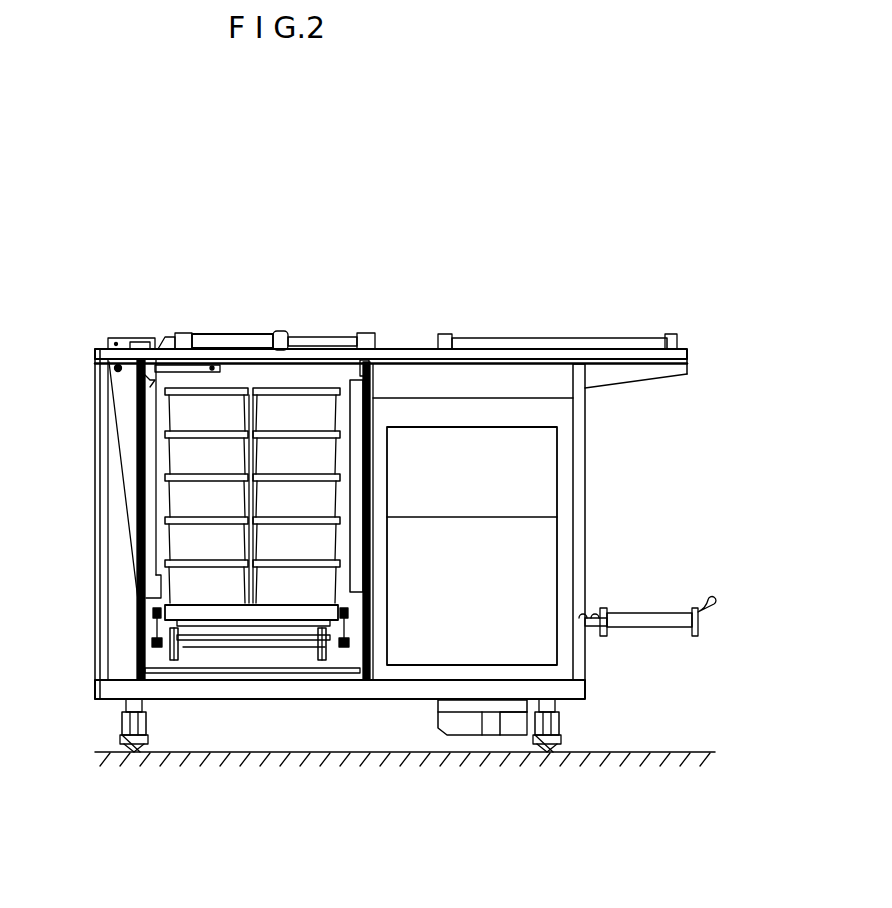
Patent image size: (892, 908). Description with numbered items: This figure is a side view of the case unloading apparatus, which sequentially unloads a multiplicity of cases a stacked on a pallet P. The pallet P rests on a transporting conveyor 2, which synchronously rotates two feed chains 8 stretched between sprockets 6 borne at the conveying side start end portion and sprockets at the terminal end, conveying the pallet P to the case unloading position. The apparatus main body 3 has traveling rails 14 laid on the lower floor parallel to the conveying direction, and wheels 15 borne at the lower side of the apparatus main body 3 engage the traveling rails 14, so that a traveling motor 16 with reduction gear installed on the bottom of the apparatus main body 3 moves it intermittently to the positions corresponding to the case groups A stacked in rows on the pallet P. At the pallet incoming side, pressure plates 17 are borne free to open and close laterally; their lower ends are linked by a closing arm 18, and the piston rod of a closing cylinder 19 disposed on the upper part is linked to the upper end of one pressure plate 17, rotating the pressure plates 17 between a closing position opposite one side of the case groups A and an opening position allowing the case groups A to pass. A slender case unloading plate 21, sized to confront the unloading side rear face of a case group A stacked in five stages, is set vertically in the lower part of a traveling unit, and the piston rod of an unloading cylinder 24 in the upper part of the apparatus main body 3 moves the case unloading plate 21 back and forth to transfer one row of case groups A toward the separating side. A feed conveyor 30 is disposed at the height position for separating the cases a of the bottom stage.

The transporting conveyor 2 is at (150, 644).
The apparatus main body 3 is at (374, 706).
The sprockets 6 is at (158, 645).
The feed chains 8 is at (176, 640).
The traveling rails 14 is at (133, 748).
The wheels 15 is at (122, 716).
The traveling motor with reduction gear 16 is at (463, 727).
The pressure plates 17 is at (155, 347).
The closing arm 18 is at (255, 690).
The closing cylinder 19 is at (226, 334).
The case unloading plate 21 is at (125, 422).
The unloading cylinder 24 is at (541, 340).
The feed conveyor 30 is at (665, 612).
The case groups A is at (234, 380).
The cases a is at (178, 580).
The pallet P is at (137, 600).